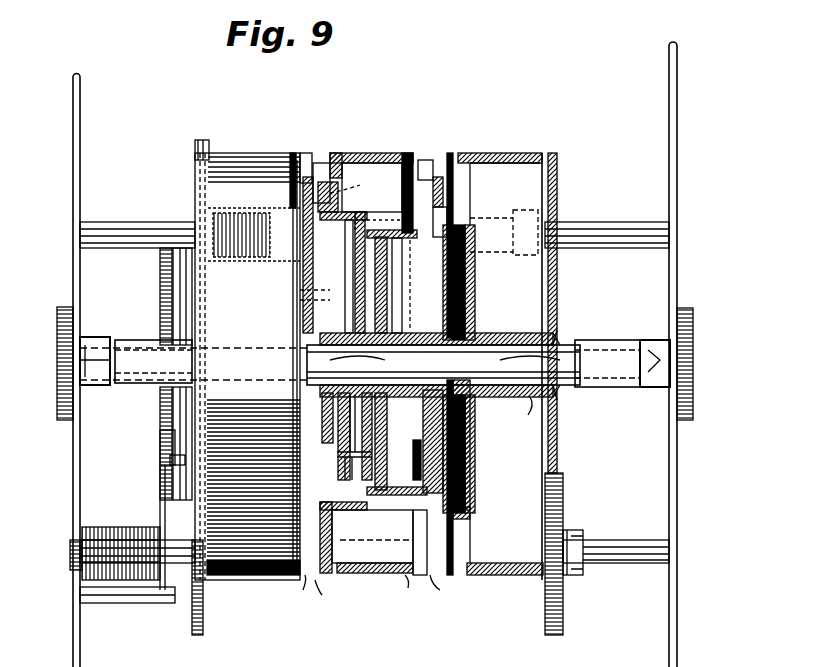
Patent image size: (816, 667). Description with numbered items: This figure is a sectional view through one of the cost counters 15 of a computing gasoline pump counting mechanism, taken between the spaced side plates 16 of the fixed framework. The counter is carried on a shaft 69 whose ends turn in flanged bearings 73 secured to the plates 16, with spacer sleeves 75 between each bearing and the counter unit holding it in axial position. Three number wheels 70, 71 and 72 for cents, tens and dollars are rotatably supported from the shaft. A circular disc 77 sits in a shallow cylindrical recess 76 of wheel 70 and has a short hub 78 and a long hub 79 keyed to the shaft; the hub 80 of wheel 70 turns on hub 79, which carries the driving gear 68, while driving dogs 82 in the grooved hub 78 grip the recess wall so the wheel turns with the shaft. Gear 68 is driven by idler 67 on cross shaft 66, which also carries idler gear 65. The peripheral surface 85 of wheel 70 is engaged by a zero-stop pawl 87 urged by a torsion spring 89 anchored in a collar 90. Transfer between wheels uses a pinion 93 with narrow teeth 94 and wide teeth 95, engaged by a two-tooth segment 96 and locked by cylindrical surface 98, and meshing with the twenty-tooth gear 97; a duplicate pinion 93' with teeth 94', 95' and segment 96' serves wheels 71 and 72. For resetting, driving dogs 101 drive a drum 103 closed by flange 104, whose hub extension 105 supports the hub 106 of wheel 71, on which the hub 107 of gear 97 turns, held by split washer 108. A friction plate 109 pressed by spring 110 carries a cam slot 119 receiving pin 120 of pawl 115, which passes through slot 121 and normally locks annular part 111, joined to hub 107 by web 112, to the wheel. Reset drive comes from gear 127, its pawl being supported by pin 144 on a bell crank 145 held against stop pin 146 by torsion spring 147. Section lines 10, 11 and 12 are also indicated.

The section line 10 is at (422, 89).
The section line 11 is at (308, 640).
The section line 12 is at (345, 105).
The cost counter 15 is at (546, 115).
The side plate 16 is at (75, 110).
The idler gear 65 is at (192, 625).
The cross shaft 66 is at (628, 569).
The idler 67 is at (563, 603).
The driving gear 68 is at (557, 163).
The shaft 69 is at (546, 334).
The number wheel 70 is at (503, 153).
The number wheel 71 is at (368, 153).
The number wheel 72 is at (205, 151).
The bearing 73 is at (88, 337).
The spacer sleeve 75 is at (133, 388).
The cylindrical recess 76 is at (472, 516).
The circular disc 77 is at (475, 471).
The short hub 78 is at (465, 397).
The long hub 79 is at (518, 413).
The hub 80 is at (508, 333).
The driving dog 82 is at (475, 276).
The peripheral surface 85 is at (322, 579).
The pawl 87 is at (205, 323).
The torsion spring 89 is at (221, 259).
The collar 90 is at (270, 204).
The pinion 93 is at (414, 143).
The pinion 93' is at (322, 220).
The narrow tooth 94 is at (449, 172).
The narrow tooth 94' is at (298, 156).
The wide tooth 95 is at (464, 230).
The wide tooth 95' is at (338, 169).
The segment 96 is at (495, 213).
The segment 96' is at (355, 182).
The gear 97 is at (290, 178).
The cylindrical surface 98 is at (308, 581).
The driving dog 101 is at (320, 301).
The drum 103 is at (345, 272).
The circular flange 104 is at (320, 293).
The sleeve-like extension 105 is at (310, 367).
The hub 106 is at (401, 285).
The hub 107 is at (472, 361).
The split washer 108 is at (373, 418).
The friction plate 109 is at (379, 542).
The spring 110 is at (372, 441).
The annular part 111 is at (403, 229).
The web 112 is at (378, 456).
The pawl 115 is at (405, 442).
The cam slot 119 is at (345, 458).
The pin 120 is at (360, 501).
The slot 121 is at (380, 471).
The reset gear 127 is at (160, 262).
The pin 144 is at (168, 455).
The bell crank 145 is at (162, 479).
The stop pin 146 is at (100, 601).
The torsion spring 147 is at (137, 526).